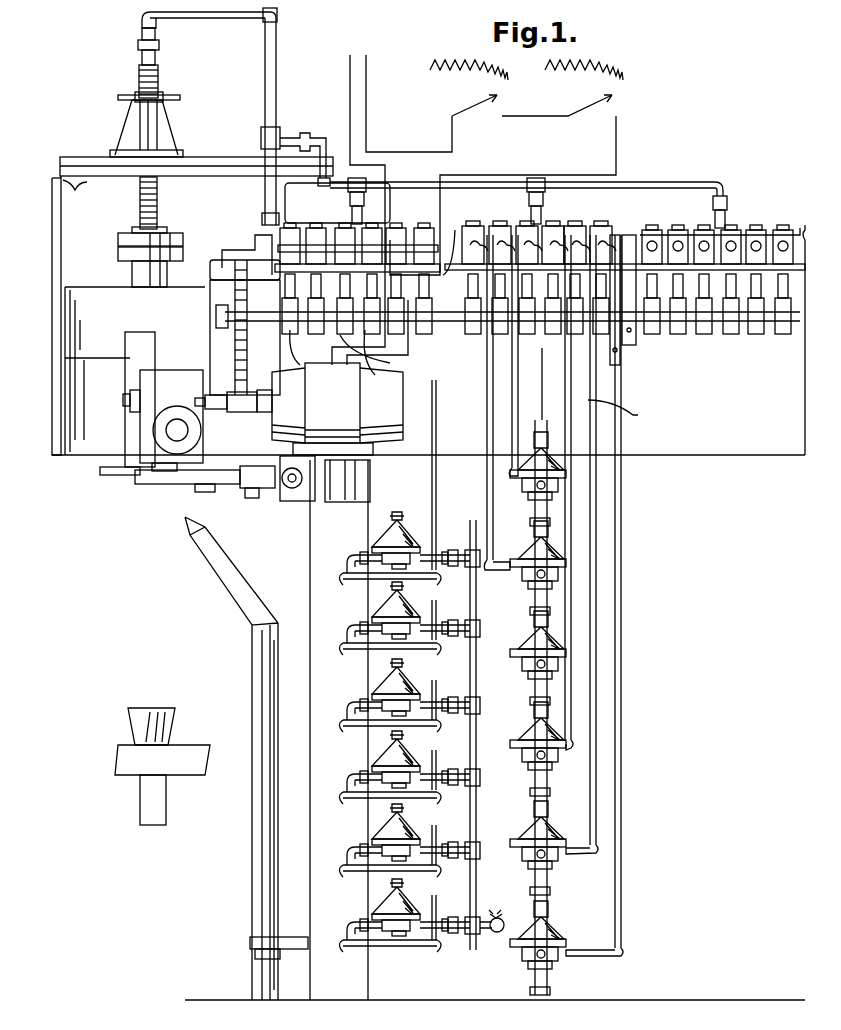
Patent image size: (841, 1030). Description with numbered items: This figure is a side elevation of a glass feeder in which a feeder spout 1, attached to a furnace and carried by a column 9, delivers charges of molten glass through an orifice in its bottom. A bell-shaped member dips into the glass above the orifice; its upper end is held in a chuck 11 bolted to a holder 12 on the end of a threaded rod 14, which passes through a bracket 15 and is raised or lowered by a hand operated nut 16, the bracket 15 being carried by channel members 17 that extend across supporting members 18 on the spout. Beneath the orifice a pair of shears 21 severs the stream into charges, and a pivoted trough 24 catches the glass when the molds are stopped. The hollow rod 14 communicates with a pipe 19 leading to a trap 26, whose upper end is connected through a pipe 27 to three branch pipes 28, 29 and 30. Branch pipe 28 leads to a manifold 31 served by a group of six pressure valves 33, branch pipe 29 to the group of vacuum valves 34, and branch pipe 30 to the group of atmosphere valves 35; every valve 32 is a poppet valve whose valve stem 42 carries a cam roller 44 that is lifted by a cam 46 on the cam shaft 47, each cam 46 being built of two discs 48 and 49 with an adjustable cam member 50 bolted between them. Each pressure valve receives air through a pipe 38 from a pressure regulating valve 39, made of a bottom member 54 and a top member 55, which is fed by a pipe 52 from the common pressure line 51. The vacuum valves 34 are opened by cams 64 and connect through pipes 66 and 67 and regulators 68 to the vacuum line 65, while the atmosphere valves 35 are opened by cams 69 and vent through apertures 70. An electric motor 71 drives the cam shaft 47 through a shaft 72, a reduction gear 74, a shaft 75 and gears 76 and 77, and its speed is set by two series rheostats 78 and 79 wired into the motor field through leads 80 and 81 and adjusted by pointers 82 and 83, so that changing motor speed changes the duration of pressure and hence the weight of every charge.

The feeder spout 1 is at (78, 271).
The column 9 is at (340, 914).
The chuck 11 is at (122, 256).
The holder 12 is at (124, 245).
The threaded rod 14 is at (138, 80).
The bracket 15 is at (158, 138).
The hand operated nut 16 is at (162, 94).
The channel members 17 is at (216, 164).
The supporting members 18 is at (56, 243).
The pipe 19 is at (142, 30).
The shears 21 is at (128, 480).
The trough 24 is at (243, 600).
The trap 26 is at (281, 140).
The pipe 27 is at (325, 150).
The branch pipe 28 is at (352, 198).
The branch pipe 29 is at (532, 198).
The branch pipe 30 is at (747, 185).
The manifold 31 is at (412, 225).
The valve 32 is at (265, 240).
The group of pressure valves 33 is at (378, 228).
The group of vacuum valves 34 is at (558, 222).
The group of atmosphere valves 35 is at (745, 228).
The pipe 38 is at (436, 468).
The pressure regulating valve 39 is at (385, 527).
The valve stem 42 is at (460, 230).
The cam roller 44 is at (326, 300).
The cam 46 is at (390, 350).
The cam shaft 47 is at (262, 345).
The disc 48 is at (337, 360).
The disc 49 is at (324, 368).
The cam member 50 is at (280, 292).
The pressure line 51 is at (478, 600).
The pipe 52 is at (450, 535).
The bottom member 54 is at (380, 575).
The top member 55 is at (402, 538).
The cams 64 is at (612, 544).
The vacuum line 65 is at (575, 470).
The pipes 66 is at (494, 450).
The pipes 67 is at (537, 477).
The regulators 68 is at (566, 548).
The cams 69 is at (712, 338).
The apertures 70 is at (632, 236).
The electric motor 71 is at (238, 482).
The shaft 72 is at (195, 474).
The reduction gear 74 is at (165, 407).
The shaft 75 is at (217, 402).
The gear 76 is at (233, 389).
The sprocket 77 is at (245, 327).
The rheostat 78 is at (620, 80).
The rheostat 79 is at (446, 65).
The lead 80 is at (520, 151).
The lead 81 is at (438, 148).
The pointer 82 is at (568, 116).
The pointer 83 is at (462, 112).